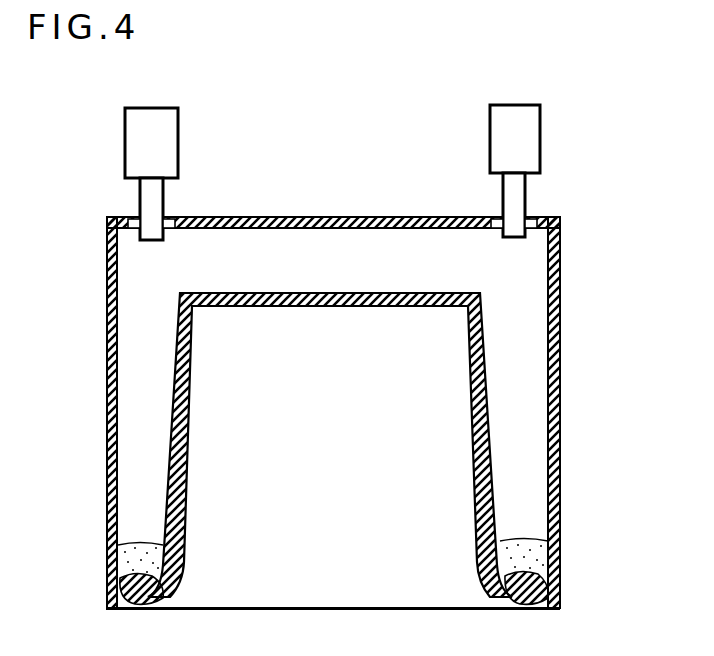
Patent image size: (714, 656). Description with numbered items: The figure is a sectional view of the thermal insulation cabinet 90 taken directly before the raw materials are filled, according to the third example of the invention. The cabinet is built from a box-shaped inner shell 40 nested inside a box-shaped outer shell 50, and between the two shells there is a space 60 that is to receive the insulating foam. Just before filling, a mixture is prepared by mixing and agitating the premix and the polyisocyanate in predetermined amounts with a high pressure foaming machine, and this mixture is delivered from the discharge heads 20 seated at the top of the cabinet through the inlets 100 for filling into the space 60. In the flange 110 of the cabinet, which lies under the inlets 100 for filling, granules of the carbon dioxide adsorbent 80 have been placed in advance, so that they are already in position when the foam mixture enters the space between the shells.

The discharge head 20 is at (178, 135).
The box-shaped inner shell 40 is at (482, 400).
The box-shaped outer shell 50 is at (556, 390).
The space 60 is at (530, 308).
The carbon dioxide adsorbent 80 is at (133, 553).
The thermal insulation cabinet 90 is at (568, 244).
The inlet for filling 100 is at (173, 219).
The flange 110 is at (142, 588).